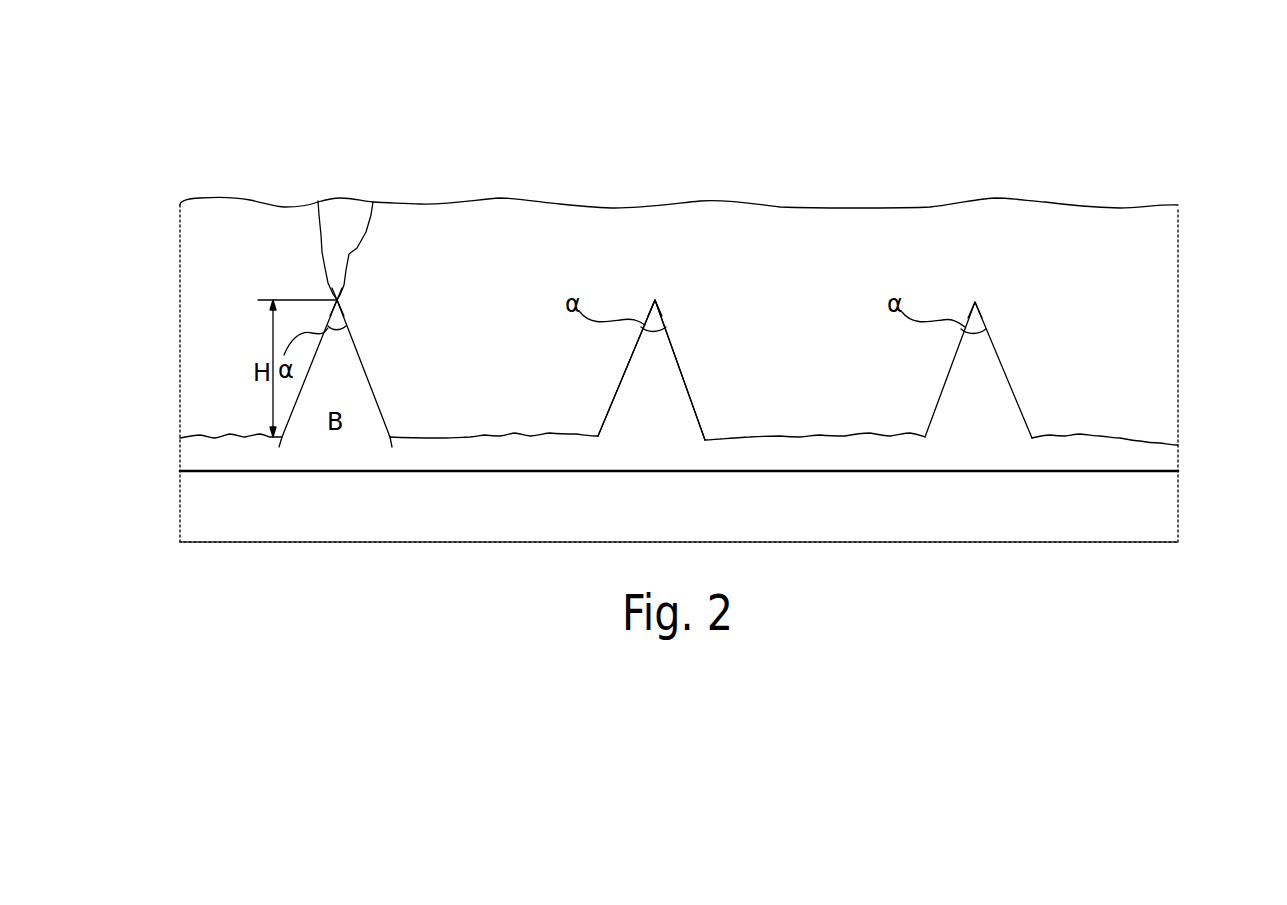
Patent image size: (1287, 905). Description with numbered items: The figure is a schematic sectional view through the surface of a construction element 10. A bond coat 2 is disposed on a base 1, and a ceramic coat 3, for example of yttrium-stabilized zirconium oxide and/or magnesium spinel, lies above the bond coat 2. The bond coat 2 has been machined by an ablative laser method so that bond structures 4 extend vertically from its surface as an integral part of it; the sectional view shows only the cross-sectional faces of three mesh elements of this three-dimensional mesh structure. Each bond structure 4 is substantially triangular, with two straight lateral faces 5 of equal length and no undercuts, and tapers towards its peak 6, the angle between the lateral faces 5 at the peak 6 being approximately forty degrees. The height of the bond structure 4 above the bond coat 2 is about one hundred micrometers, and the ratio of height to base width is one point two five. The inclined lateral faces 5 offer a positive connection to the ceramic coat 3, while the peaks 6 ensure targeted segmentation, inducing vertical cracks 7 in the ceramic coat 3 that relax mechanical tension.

The base 1 is at (1170, 505).
The bond coat 2 is at (1170, 455).
The ceramic coat 3 is at (1170, 218).
The bond structures 4 is at (387, 375).
The lateral faces 5 is at (630, 363).
The peaks 6 is at (340, 297).
The cracks 7 is at (318, 224).
The construction element 10 is at (1143, 115).